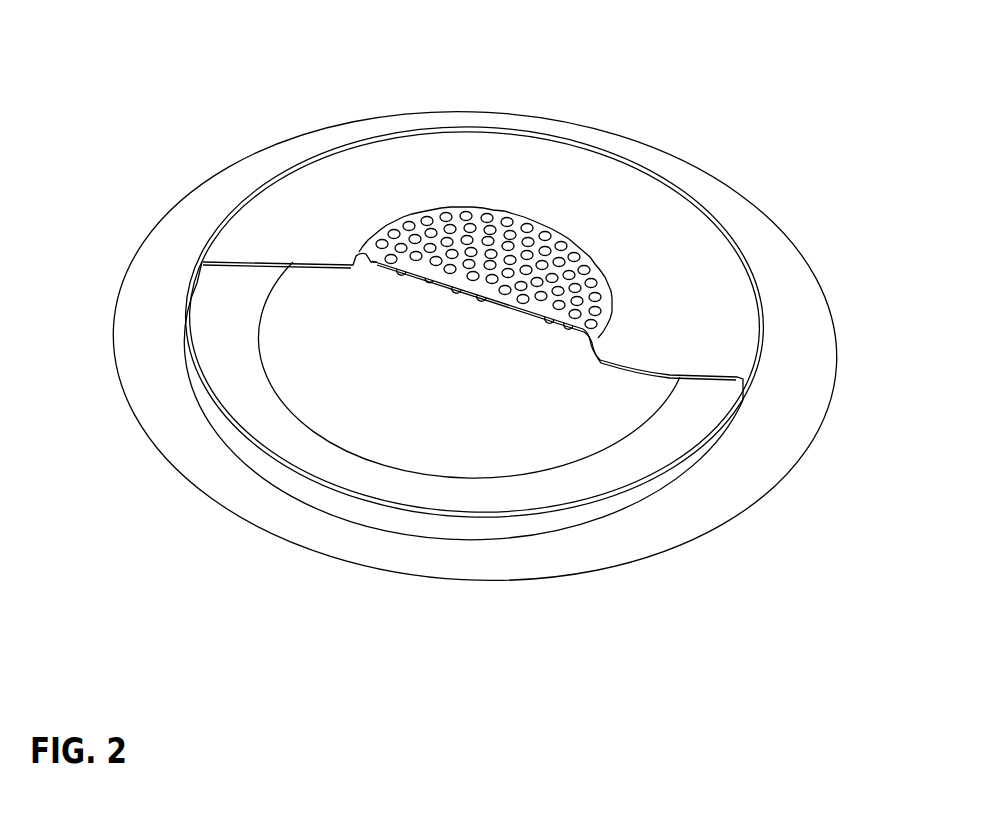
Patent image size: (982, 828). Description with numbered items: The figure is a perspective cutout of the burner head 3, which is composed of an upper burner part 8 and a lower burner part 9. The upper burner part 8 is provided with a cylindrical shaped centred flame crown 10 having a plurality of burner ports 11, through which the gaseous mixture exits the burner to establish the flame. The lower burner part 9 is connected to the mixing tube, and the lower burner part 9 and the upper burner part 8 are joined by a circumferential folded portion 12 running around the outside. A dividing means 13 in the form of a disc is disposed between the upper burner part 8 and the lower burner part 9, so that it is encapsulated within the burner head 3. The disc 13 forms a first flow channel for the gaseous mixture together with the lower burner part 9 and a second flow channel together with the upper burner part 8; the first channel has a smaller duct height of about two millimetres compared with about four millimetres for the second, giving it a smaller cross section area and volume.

The burner head 3 is at (318, 94).
The upper burner part 8 is at (287, 225).
The lower burner part 9 is at (667, 428).
The flame crown 10 is at (607, 333).
The burner ports 11 is at (450, 213).
The circumferential folded portion 12 is at (653, 540).
The dividing means 13 is at (428, 377).